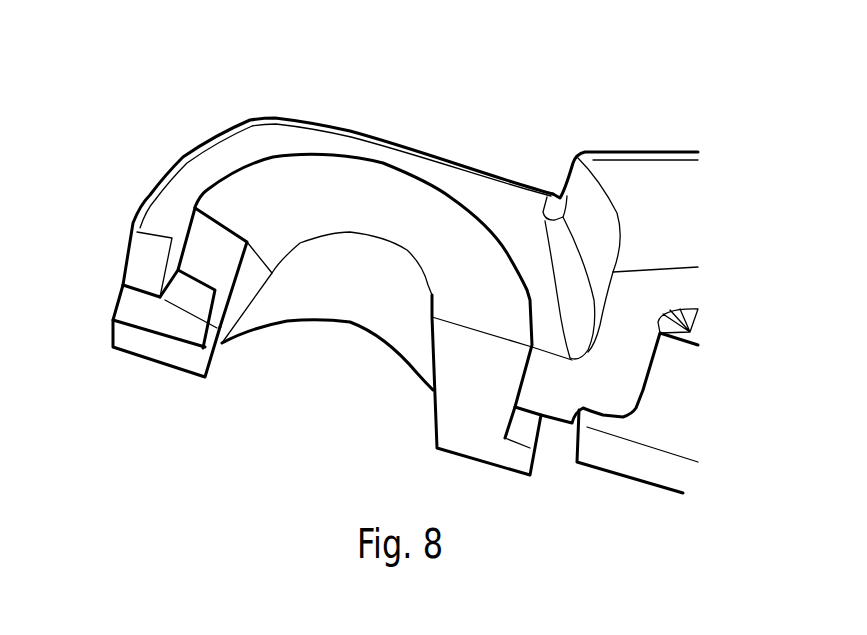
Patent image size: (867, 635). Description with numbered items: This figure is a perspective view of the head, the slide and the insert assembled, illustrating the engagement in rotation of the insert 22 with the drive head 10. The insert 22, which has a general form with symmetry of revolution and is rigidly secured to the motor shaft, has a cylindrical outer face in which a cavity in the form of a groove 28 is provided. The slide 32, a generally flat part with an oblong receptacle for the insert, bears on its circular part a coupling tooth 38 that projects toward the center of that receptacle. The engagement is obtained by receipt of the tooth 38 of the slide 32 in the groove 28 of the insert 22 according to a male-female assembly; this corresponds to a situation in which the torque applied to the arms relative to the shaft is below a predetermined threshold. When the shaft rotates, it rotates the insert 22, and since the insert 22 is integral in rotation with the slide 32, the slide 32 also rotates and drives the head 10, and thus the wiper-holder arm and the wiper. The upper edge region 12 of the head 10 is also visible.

The drive head 10 is at (473, 185).
The upper edge of the body 12 is at (297, 142).
The insert 22 is at (185, 360).
The groove 28 is at (215, 250).
The slide 32 is at (142, 305).
The coupling tooth 38 is at (187, 308).